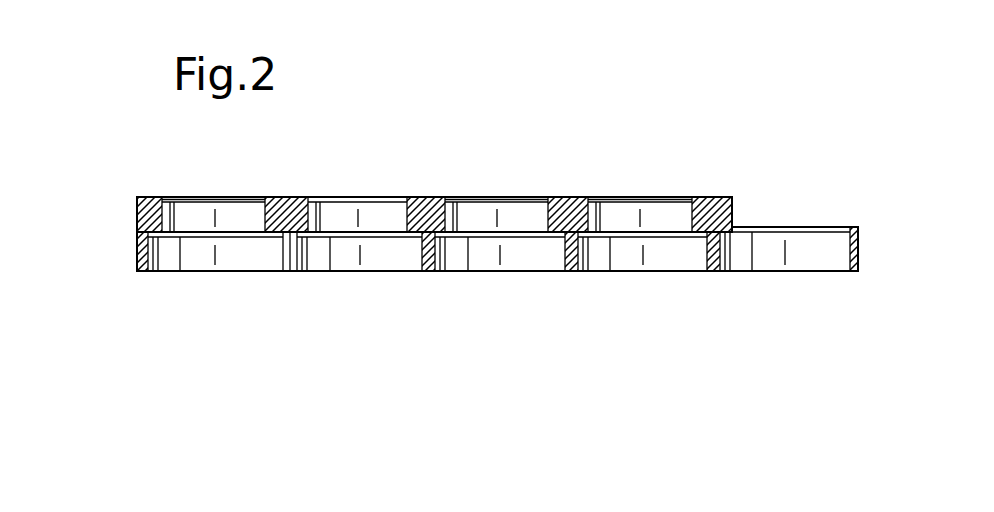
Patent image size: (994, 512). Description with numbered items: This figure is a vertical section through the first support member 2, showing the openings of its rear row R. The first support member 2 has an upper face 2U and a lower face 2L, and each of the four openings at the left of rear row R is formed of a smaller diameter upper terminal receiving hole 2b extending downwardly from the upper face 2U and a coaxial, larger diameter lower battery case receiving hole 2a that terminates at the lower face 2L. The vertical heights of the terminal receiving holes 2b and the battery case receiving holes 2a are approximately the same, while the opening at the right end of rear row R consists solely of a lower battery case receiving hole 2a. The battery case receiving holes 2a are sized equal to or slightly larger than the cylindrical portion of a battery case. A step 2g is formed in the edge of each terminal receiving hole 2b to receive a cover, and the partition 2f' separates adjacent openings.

The first support member 2 is at (509, 225).
The upper face 2U is at (700, 196).
The lower face 2L is at (840, 272).
The lower battery case receiving hole 2a is at (238, 250).
The upper terminal receiving hole 2b is at (198, 218).
The step 2g is at (227, 200).
The partition wall 2f' is at (573, 291).
The rear row R is at (120, 235).